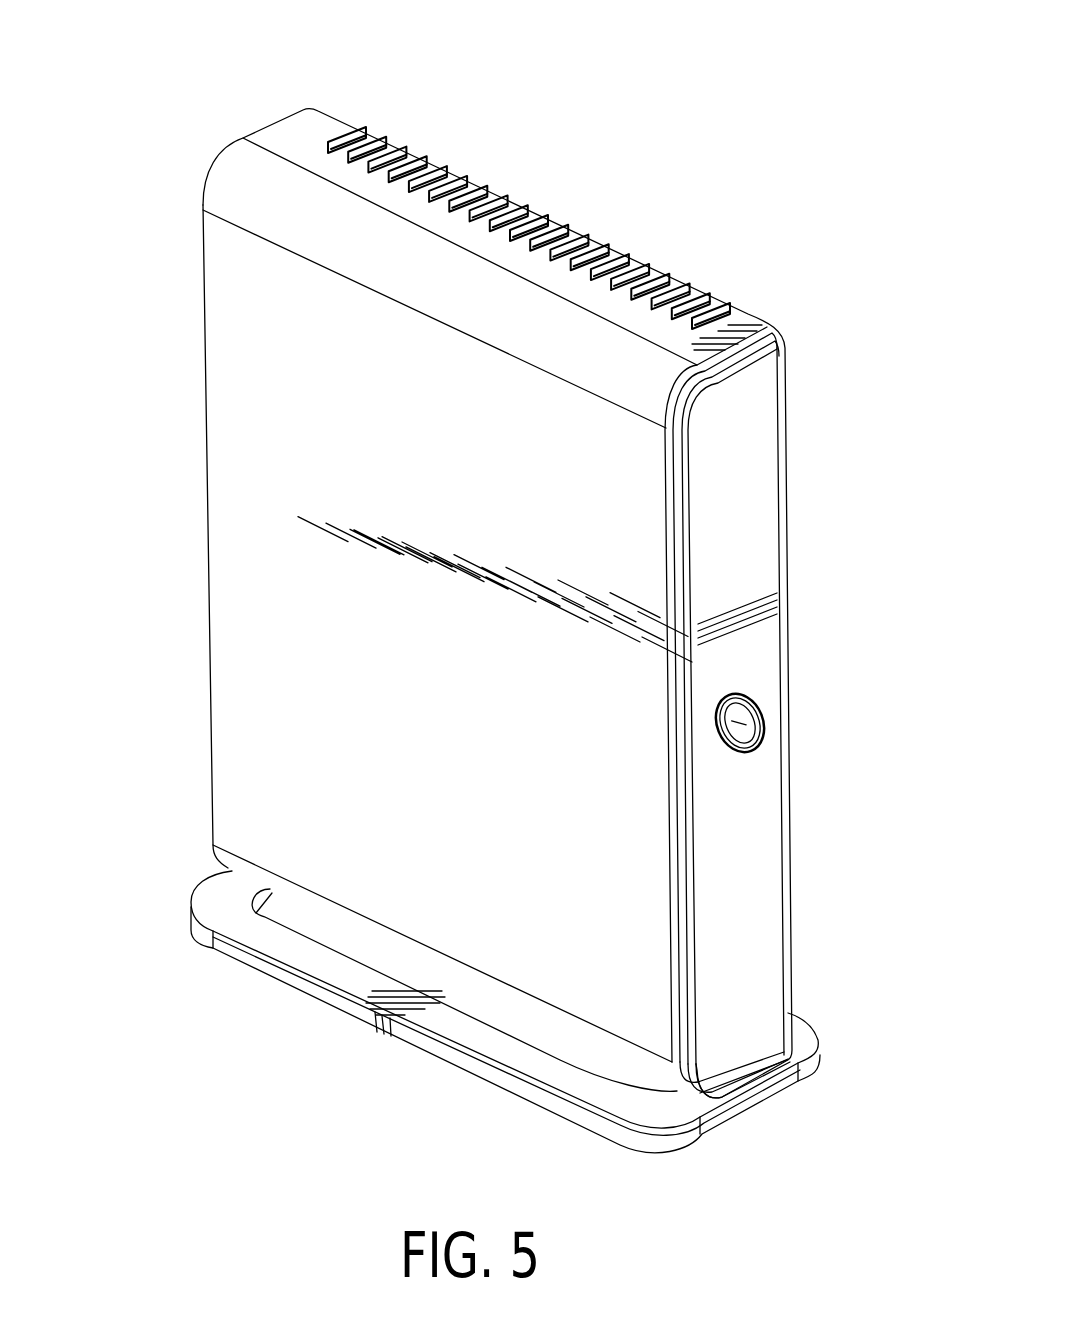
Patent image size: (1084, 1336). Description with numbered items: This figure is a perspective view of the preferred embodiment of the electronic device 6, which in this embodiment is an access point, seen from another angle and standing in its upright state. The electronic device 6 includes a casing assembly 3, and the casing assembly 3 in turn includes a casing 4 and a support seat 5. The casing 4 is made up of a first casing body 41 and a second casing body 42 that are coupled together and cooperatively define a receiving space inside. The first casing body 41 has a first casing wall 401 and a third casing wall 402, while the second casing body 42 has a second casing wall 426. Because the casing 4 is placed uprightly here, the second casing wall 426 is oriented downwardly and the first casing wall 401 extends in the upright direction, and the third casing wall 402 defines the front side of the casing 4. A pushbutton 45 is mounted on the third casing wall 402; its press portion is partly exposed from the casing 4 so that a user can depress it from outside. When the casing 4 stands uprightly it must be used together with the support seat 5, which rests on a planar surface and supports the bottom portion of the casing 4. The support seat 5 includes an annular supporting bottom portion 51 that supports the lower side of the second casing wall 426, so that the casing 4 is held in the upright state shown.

The electronic device 6 is at (728, 118).
The casing assembly 3 is at (730, 240).
The casing 4 is at (232, 352).
The first casing body 41 is at (787, 519).
The first casing wall 401 is at (787, 632).
The third casing wall 402 is at (750, 929).
The second casing body 42 is at (233, 519).
The pushbutton 45 is at (745, 741).
The second casing wall 426 is at (746, 1077).
The support seat 5 is at (295, 953).
The supporting bottom portion 51 is at (472, 1028).